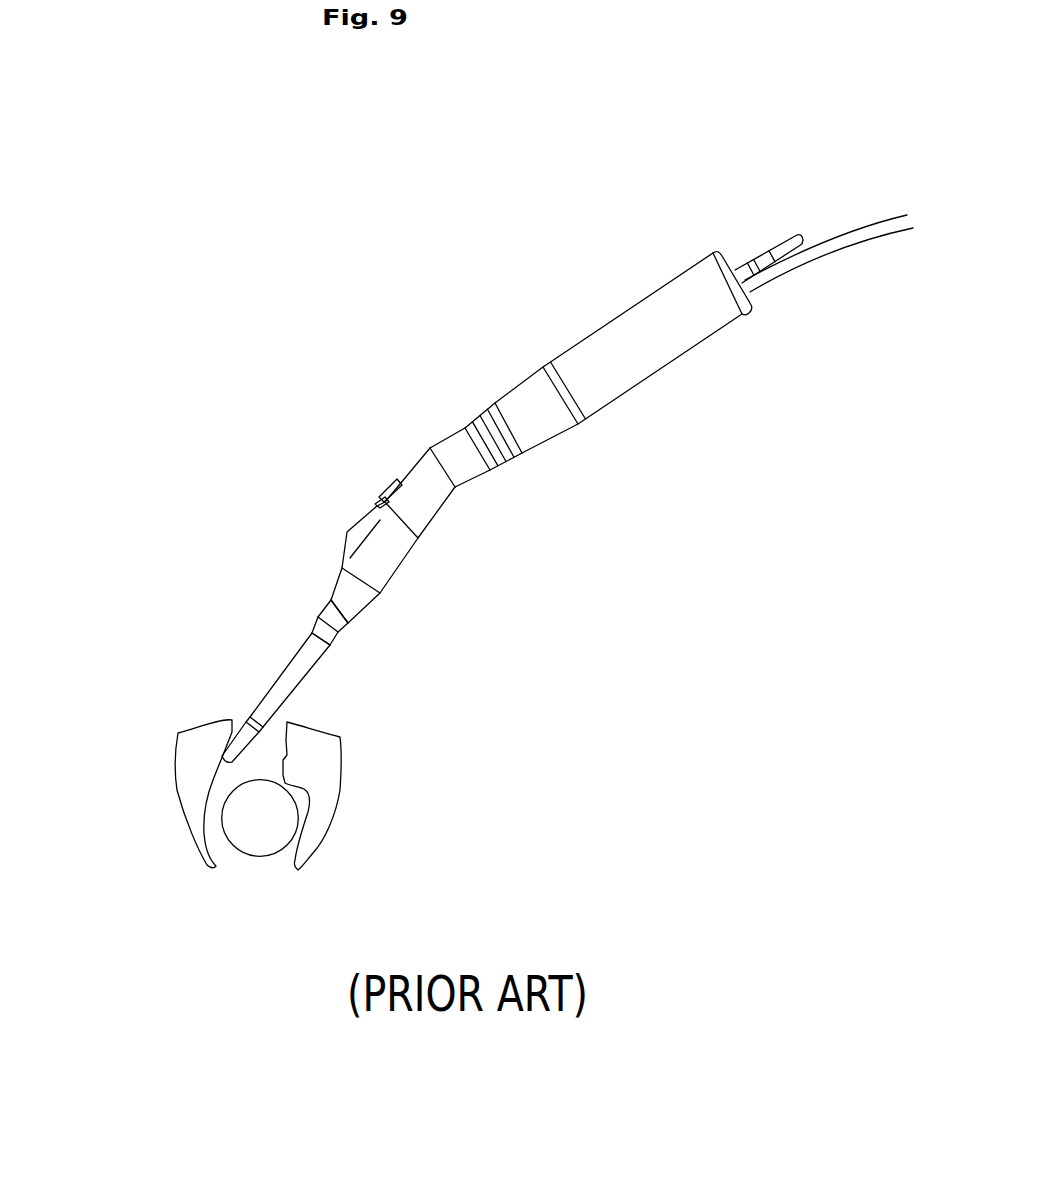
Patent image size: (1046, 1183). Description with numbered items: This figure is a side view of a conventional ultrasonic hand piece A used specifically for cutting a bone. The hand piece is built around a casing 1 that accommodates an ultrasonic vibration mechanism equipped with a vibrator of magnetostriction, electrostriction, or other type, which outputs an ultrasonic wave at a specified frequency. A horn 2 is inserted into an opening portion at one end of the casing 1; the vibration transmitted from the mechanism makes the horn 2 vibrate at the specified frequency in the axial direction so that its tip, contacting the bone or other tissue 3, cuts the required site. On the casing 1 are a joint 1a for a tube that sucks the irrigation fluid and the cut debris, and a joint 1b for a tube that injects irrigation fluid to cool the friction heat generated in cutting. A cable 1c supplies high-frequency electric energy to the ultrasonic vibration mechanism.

The ultrasonic hand piece A is at (503, 375).
The casing 1 is at (423, 507).
The joint for a tube for sucking 1a is at (783, 240).
The joint for a tube for injecting irrigation fluid 1b is at (382, 478).
The cable 1c is at (832, 255).
The horn 2 is at (240, 722).
The bone or other tissue 3 is at (187, 772).